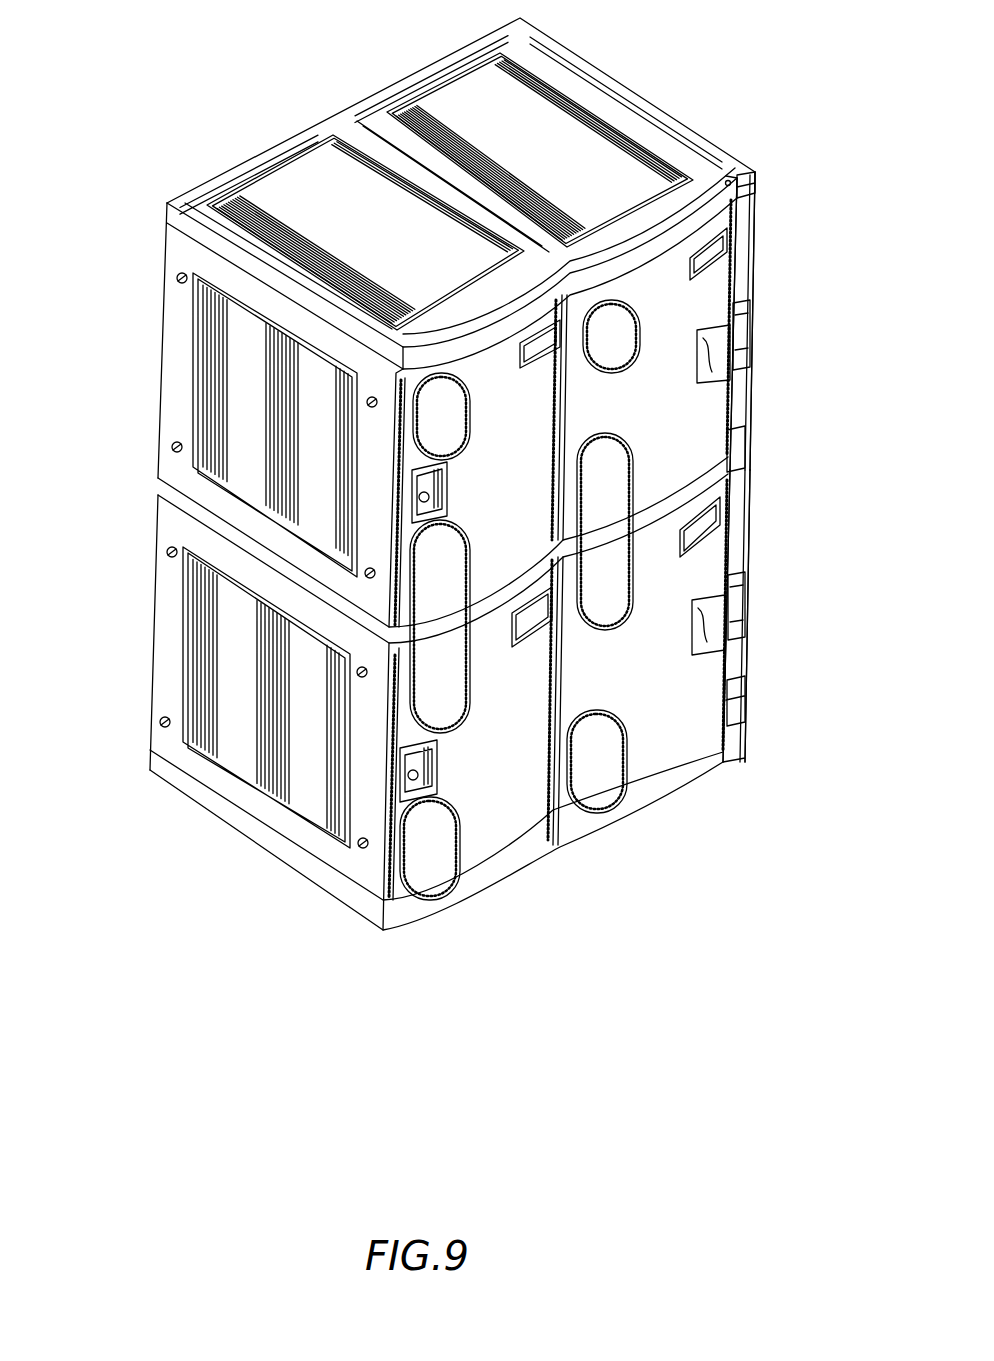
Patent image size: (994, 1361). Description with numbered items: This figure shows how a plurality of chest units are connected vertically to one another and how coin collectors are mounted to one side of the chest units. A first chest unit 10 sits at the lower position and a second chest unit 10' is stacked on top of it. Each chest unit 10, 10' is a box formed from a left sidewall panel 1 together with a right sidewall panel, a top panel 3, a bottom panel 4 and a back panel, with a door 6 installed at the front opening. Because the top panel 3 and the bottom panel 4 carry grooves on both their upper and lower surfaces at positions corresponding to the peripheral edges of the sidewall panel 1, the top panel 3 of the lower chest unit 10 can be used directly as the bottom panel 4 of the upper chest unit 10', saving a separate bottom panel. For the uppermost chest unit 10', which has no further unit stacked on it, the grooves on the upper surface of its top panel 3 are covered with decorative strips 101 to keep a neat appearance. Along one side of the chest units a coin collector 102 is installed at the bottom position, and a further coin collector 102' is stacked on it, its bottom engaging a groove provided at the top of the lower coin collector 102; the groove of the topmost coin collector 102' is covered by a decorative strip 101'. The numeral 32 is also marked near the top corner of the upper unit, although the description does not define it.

The chest unit 10 is at (450, 769).
The second chest unit 10' is at (456, 316).
The left sidewall panel 1 is at (177, 358).
The top panel 3 is at (178, 202).
The bottom panel 4 is at (268, 846).
The door 6 is at (703, 305).
The decorative strips 101 is at (226, 286).
The decorative strip 101' is at (609, 216).
The coin collector 102 is at (797, 616).
The coin collector 102' is at (794, 321).
The corner fitting 32 is at (747, 167).